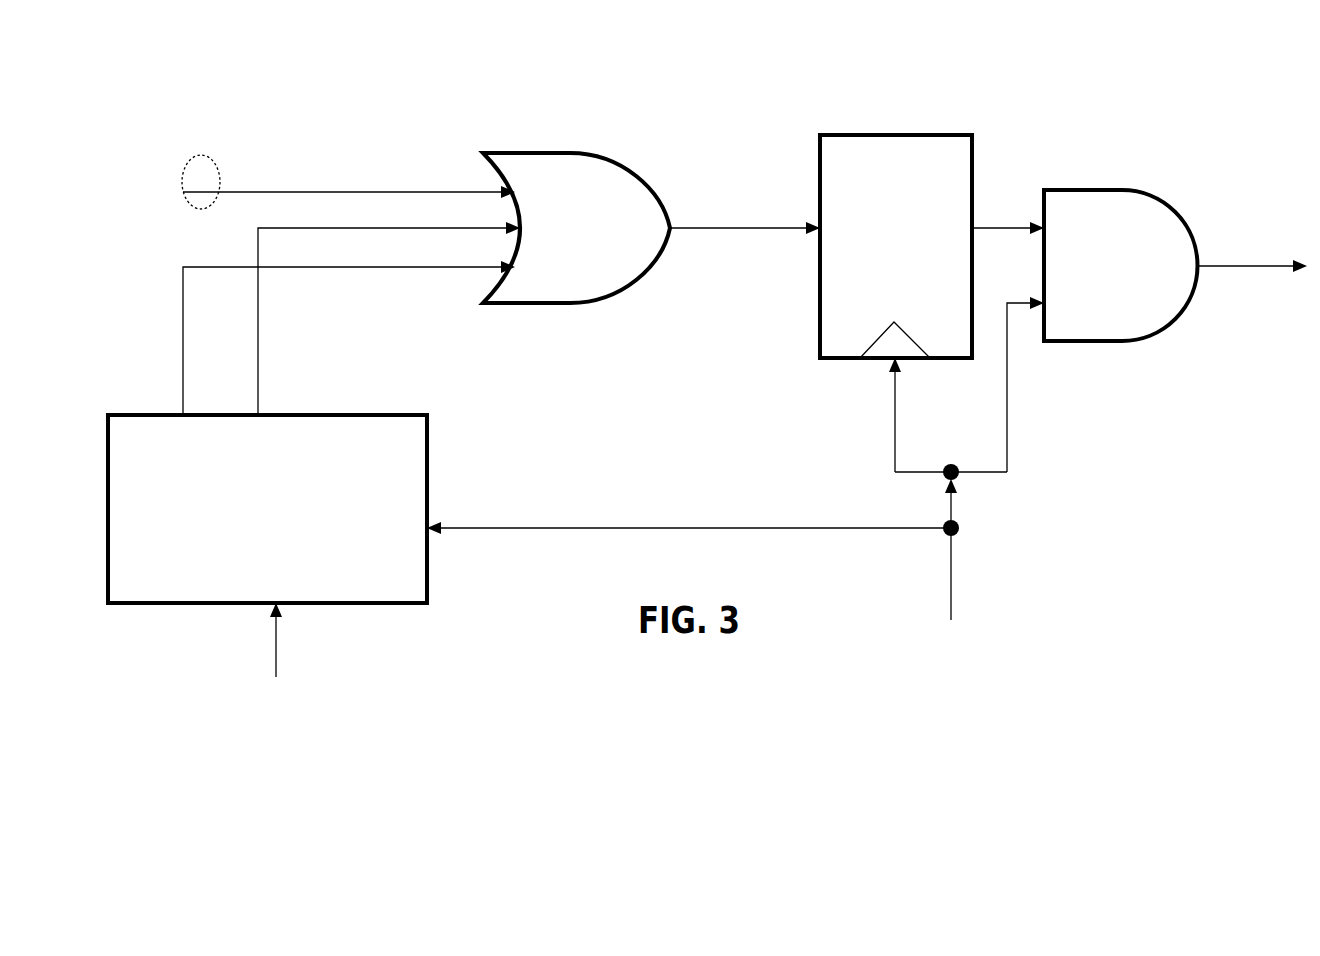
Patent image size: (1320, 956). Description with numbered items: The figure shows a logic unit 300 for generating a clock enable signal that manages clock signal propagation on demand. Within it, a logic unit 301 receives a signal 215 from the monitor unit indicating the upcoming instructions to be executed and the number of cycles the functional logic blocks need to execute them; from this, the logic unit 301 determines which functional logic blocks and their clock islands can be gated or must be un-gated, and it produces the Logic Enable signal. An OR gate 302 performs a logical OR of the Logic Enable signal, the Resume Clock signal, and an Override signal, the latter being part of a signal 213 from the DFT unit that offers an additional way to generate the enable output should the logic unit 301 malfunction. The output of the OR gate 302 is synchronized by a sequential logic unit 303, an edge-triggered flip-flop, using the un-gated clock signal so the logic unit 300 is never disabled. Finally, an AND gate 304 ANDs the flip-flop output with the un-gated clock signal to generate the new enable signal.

The logic unit 300 is at (702, 62).
The signal 213 is at (190, 157).
The signal 215 is at (277, 656).
The logic unit 301 is at (267, 509).
The OR gate 302 is at (576, 228).
The sequential logic unit 303 is at (896, 246).
The AND gate 304 is at (1121, 265).